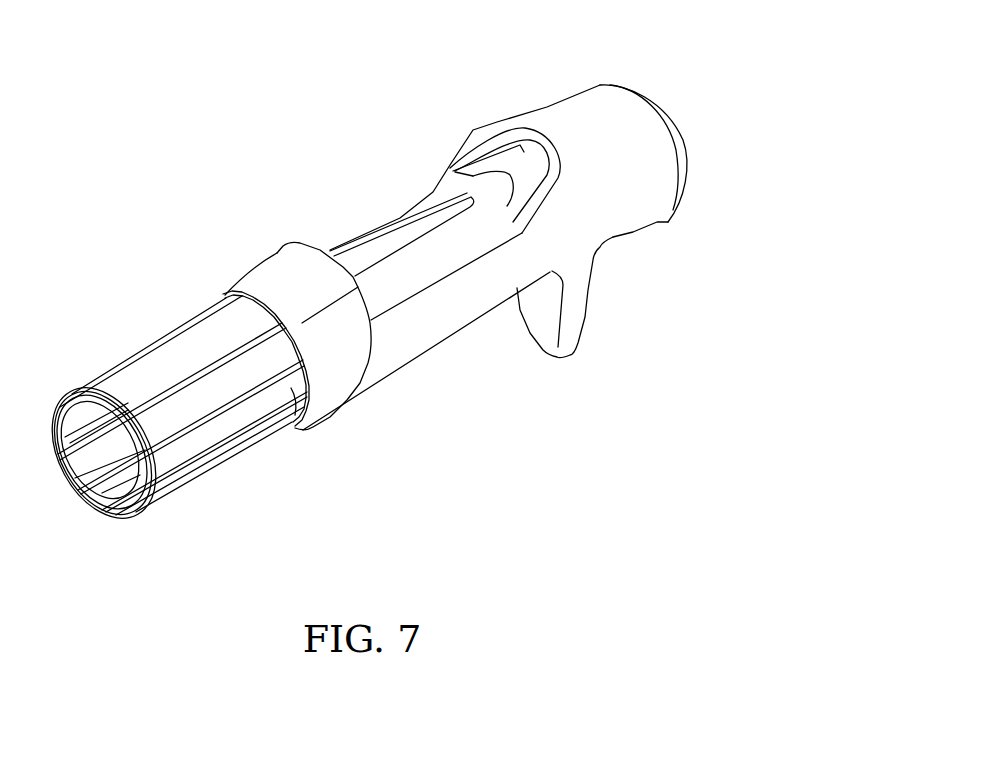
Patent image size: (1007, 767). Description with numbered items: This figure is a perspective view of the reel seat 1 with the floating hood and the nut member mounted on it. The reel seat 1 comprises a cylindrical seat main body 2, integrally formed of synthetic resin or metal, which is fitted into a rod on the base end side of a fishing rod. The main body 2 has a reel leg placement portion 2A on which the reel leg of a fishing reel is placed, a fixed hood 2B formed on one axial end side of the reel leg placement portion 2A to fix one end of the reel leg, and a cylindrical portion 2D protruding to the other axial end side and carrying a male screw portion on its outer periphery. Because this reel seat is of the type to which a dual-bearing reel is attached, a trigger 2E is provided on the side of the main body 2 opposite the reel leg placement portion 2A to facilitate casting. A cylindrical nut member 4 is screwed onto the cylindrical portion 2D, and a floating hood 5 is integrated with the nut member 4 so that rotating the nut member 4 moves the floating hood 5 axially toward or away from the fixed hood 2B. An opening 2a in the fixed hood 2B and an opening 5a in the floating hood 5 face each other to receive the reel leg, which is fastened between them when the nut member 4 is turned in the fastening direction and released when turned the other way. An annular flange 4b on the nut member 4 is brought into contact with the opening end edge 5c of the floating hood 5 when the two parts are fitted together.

The reel seat 1 is at (418, 72).
The seat main body 2 is at (392, 361).
The reel leg placement portion 2A is at (393, 240).
The fixed hood 2B is at (556, 118).
The cylindrical portion 2D is at (68, 405).
The trigger 2E is at (586, 307).
The opening 2a is at (519, 138).
The nut member 4 is at (160, 354).
The annular flange 4b is at (221, 299).
The floating hood 5 is at (262, 282).
The opening 5a is at (320, 244).
The opening end edge 5c is at (294, 392).